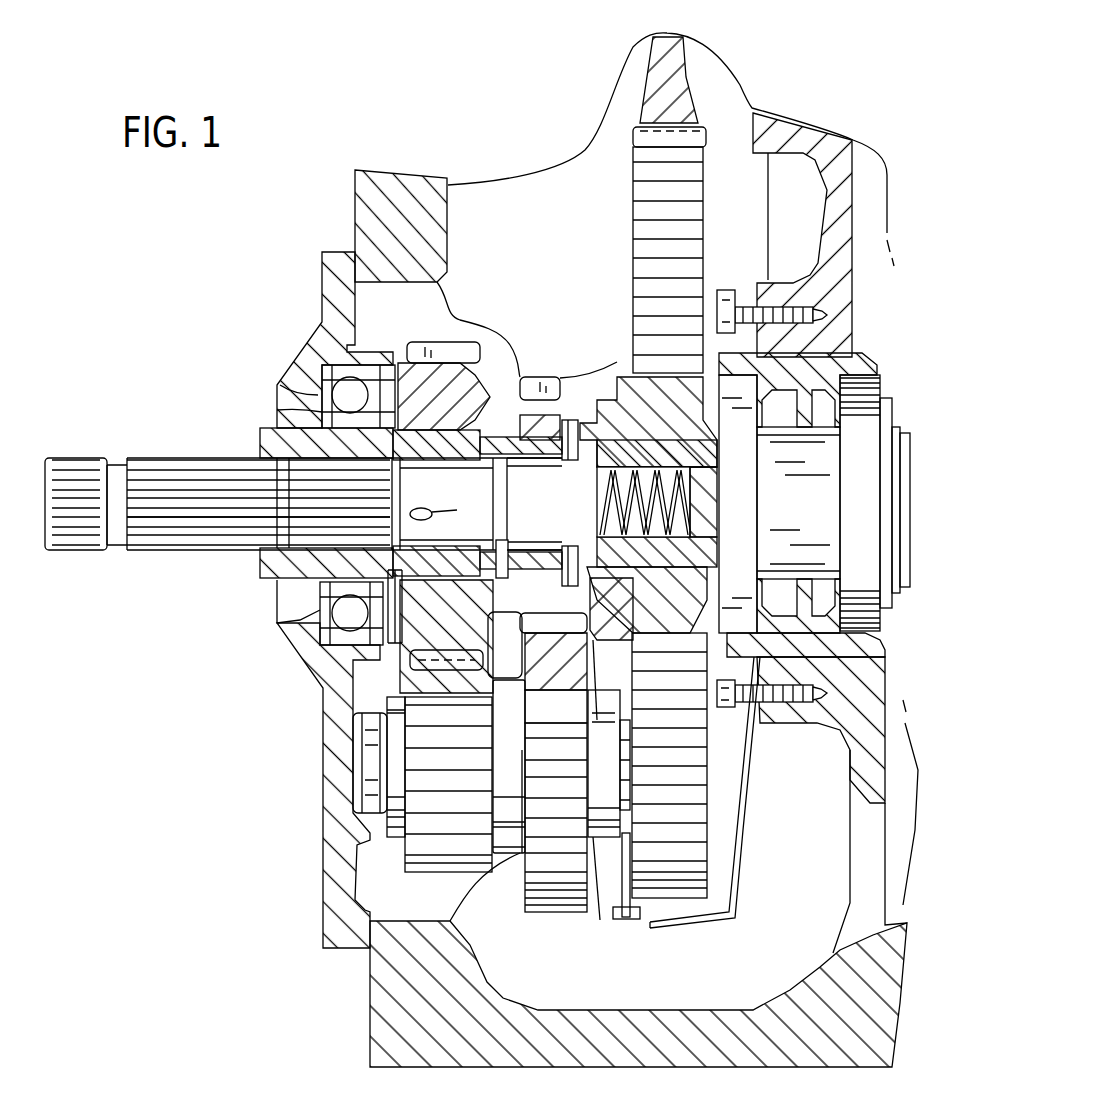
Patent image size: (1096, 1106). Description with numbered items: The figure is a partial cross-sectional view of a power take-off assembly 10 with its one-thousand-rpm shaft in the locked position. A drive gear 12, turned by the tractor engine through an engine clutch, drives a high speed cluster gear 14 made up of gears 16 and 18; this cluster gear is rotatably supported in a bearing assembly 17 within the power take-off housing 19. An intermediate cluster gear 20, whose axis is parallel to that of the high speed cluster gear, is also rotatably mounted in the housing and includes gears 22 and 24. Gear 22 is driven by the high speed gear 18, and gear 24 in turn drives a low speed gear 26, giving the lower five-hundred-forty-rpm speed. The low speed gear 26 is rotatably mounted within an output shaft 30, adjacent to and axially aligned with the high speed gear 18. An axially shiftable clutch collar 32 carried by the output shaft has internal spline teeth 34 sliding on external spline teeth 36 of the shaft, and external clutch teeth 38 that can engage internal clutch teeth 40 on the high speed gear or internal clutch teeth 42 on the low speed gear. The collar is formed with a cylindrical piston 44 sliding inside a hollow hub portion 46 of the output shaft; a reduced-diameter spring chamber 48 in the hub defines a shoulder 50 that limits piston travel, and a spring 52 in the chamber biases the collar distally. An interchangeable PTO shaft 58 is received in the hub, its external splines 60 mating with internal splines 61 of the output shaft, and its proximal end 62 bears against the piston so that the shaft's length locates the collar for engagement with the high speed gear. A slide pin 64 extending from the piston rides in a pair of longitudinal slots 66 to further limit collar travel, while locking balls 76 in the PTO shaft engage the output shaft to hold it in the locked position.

The power take-off assembly 10 is at (277, 240).
The drive gear 12 is at (600, 190).
The high speed cluster gear 14 is at (625, 375).
The gear 16 is at (632, 157).
The bearing assembly 17 is at (887, 387).
The high speed gear 18 is at (552, 372).
The power take-off housing 19 is at (318, 375).
The intermediate cluster gear 20 is at (510, 852).
The gear 22 is at (558, 913).
The gear 24 is at (447, 875).
The low speed gear 26 is at (445, 345).
The output shaft 30 is at (267, 427).
The clutch collar 32 is at (578, 418).
The internal spline teeth 34 is at (498, 575).
The external spline teeth 36 is at (490, 577).
The external clutch teeth 38 is at (523, 570).
The internal clutch teeth 40 is at (700, 658).
The internal clutch teeth 42 is at (440, 631).
The cylindrical piston 44 is at (585, 500).
The hollow hub portion 46 is at (537, 469).
The spring chamber 48 is at (650, 527).
The shoulder 50 is at (713, 455).
The spring 52 is at (680, 507).
The PTO shaft 58 is at (197, 553).
The external splines 60 is at (200, 520).
The internal splines 61 is at (263, 436).
The proximal end 62 is at (465, 375).
The slide pin 64 is at (613, 583).
The longitudinal slots 66 is at (593, 547).
The locking ball 76 is at (420, 463).